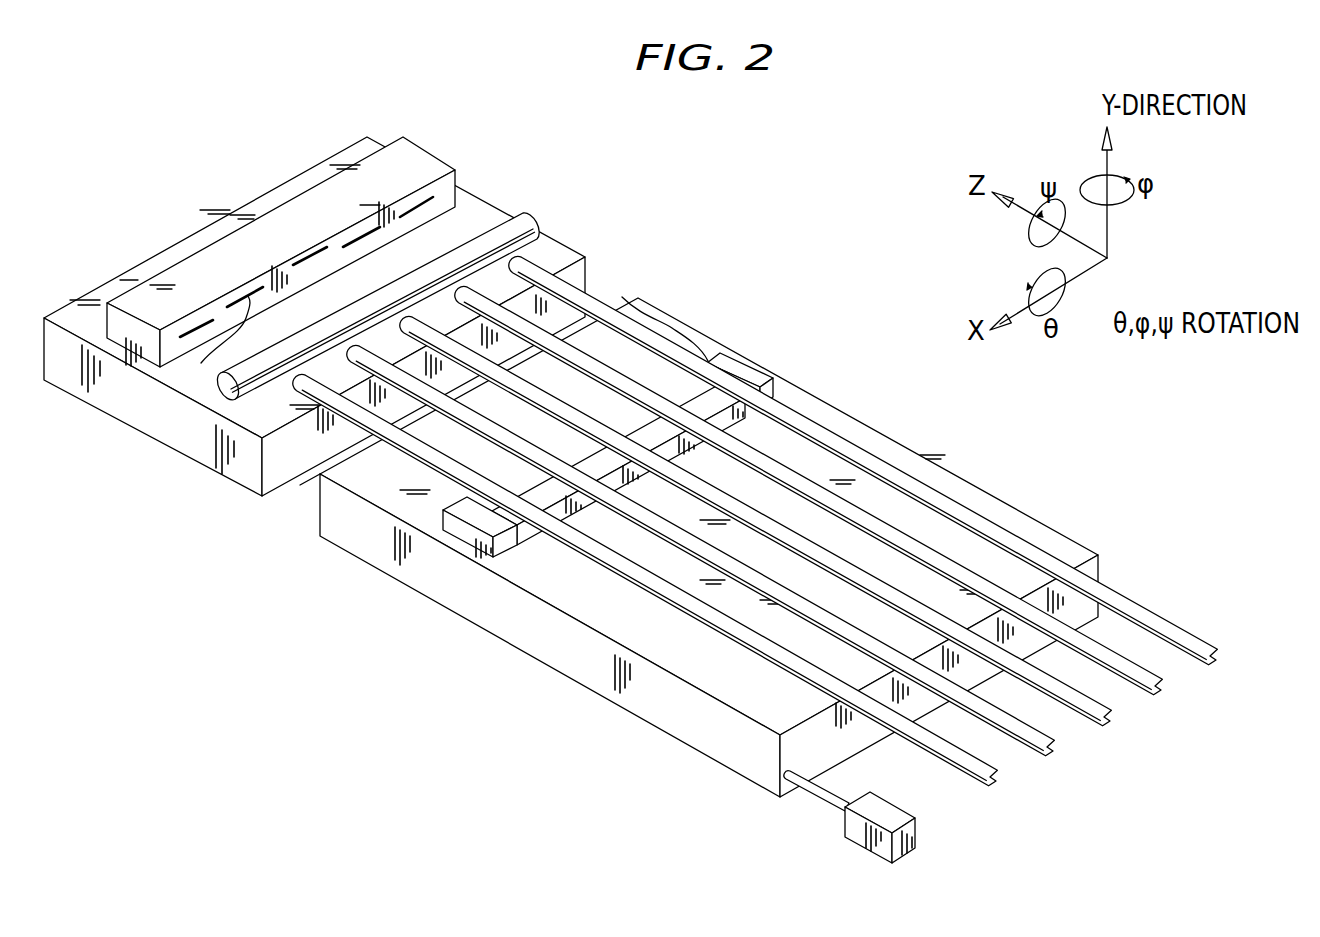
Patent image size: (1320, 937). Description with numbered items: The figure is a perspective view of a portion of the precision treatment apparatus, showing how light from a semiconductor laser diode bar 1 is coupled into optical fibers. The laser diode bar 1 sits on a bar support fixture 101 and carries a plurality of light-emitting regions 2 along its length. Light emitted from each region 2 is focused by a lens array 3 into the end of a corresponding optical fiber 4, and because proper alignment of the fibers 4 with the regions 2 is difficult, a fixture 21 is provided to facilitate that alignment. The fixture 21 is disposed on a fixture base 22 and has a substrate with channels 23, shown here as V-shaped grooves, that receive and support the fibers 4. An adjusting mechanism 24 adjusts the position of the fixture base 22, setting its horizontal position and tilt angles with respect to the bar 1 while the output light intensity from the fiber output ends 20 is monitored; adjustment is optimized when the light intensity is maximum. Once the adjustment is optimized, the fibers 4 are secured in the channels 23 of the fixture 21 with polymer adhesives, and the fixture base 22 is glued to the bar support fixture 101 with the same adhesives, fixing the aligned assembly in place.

The semiconductor laser diode bar 1 is at (417, 162).
The light-emitting regions 2 is at (203, 324).
The lens array 3 is at (512, 215).
The optical fiber 4 is at (1017, 550).
The fiber output ends 20 is at (1050, 752).
The fixture 21 is at (749, 368).
The fixture base 22 is at (887, 440).
The channels 23 is at (657, 393).
The adjusting mechanism 24 is at (878, 848).
The bar support fixture 101 is at (158, 432).